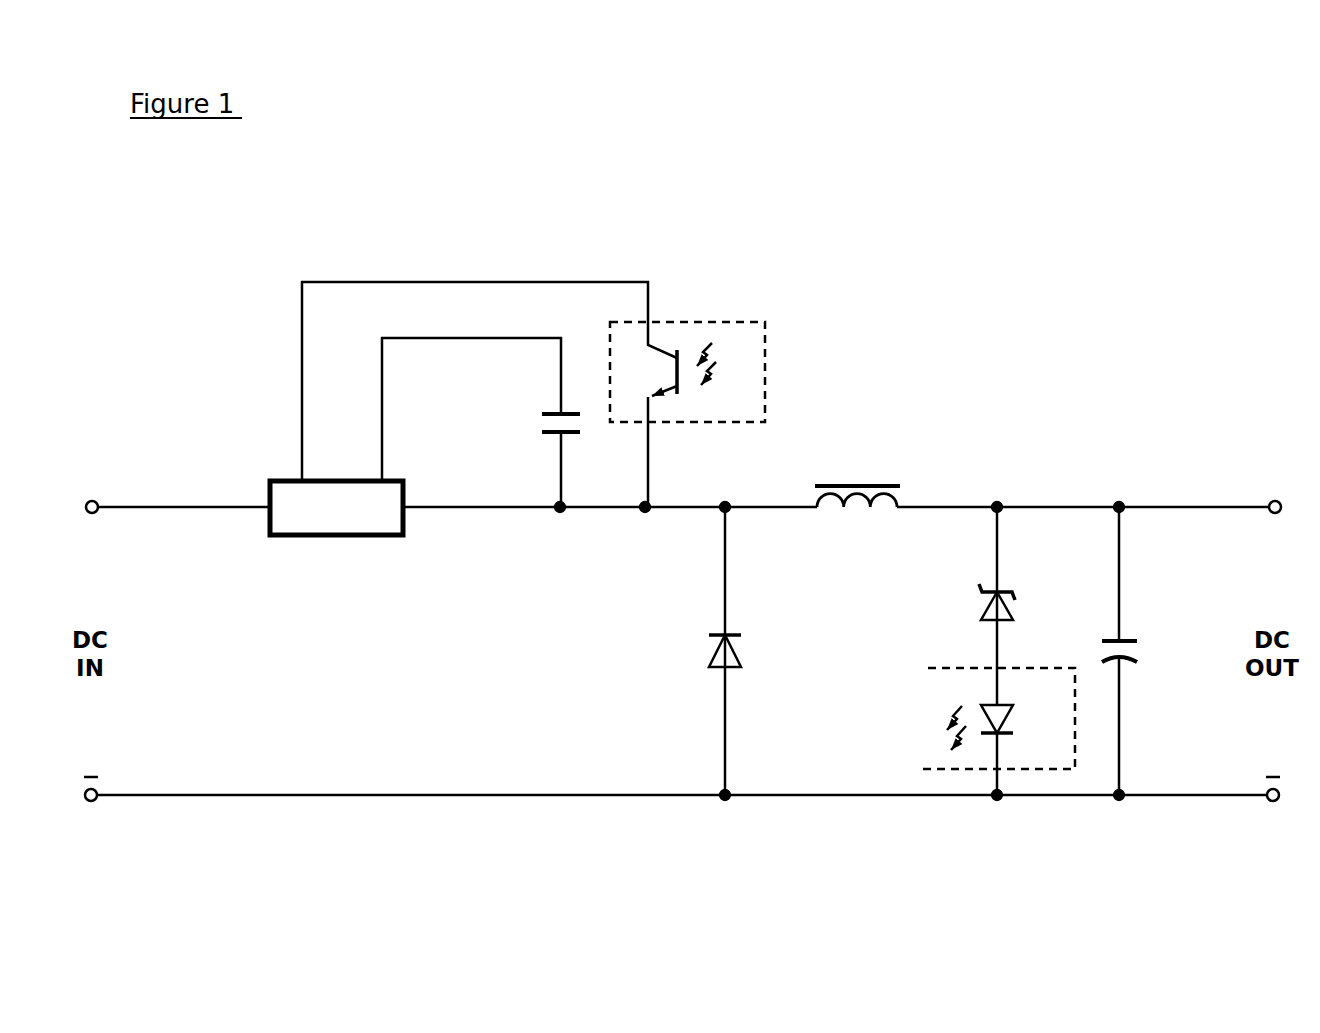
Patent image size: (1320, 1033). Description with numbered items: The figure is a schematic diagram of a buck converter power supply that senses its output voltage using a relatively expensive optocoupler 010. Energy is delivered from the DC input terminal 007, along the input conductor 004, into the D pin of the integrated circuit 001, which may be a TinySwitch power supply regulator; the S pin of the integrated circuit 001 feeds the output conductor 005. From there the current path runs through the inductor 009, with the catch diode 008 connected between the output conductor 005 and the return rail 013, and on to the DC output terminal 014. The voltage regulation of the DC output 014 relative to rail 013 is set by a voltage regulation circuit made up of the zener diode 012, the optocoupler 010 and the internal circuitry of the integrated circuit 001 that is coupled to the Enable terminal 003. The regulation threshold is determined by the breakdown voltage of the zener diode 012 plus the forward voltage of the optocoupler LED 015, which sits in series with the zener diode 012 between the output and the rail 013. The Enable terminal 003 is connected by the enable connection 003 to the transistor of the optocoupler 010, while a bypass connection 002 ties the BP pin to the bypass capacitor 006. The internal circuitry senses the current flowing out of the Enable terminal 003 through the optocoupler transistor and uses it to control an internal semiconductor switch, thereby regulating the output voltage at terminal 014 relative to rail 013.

The integrated circuit 001 is at (275, 538).
The bypass pin connection 002 is at (470, 333).
The Enable terminal 003 is at (306, 470).
The input conductor 004 is at (213, 501).
The output conductor 005 is at (598, 513).
The bypass capacitor 006 is at (530, 423).
The DC input terminal 007 is at (99, 497).
The catch diode 008 is at (750, 670).
The inductor 009 is at (902, 480).
The optocoupler 010 is at (743, 317).
The zener diode 012 is at (975, 603).
The rail 013 is at (396, 792).
The DC output terminal 014 is at (1272, 502).
The LED 015 is at (1010, 748).